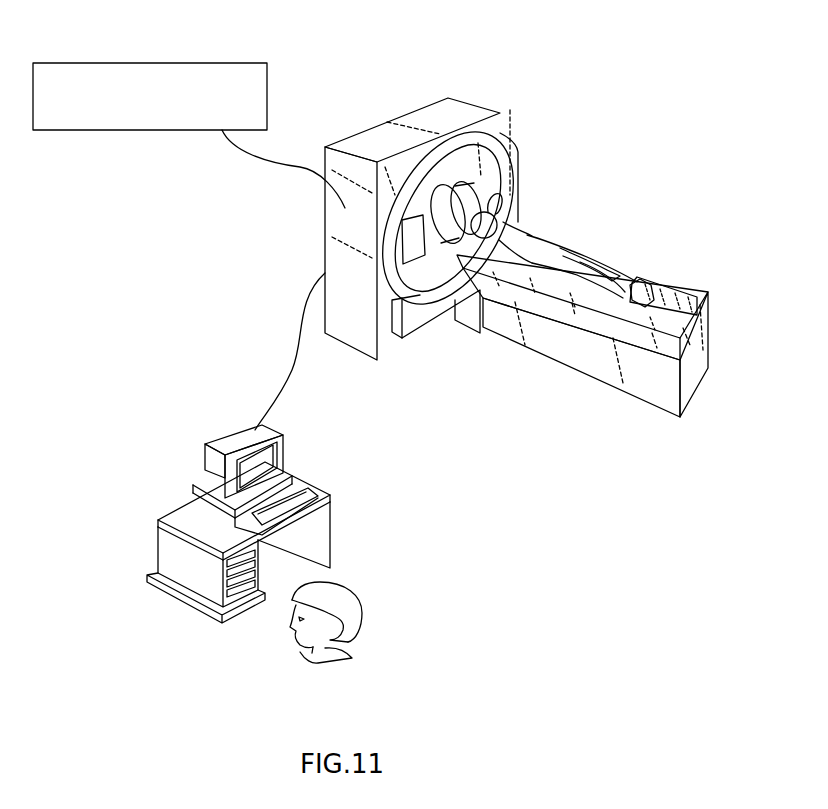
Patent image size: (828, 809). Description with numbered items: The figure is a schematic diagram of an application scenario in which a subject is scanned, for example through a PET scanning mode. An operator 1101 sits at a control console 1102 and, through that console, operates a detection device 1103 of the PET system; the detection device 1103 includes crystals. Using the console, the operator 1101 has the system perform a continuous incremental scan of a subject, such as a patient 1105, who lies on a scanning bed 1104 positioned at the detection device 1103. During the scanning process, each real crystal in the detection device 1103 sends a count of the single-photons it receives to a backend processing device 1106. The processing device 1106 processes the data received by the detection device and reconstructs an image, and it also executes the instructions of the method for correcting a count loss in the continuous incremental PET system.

The operator 1101 is at (350, 600).
The control console 1102 is at (227, 436).
The detection device 1103 is at (368, 130).
The scanning bed 1104 is at (545, 341).
The patient 1105 is at (527, 232).
The processing device 1106 is at (238, 63).